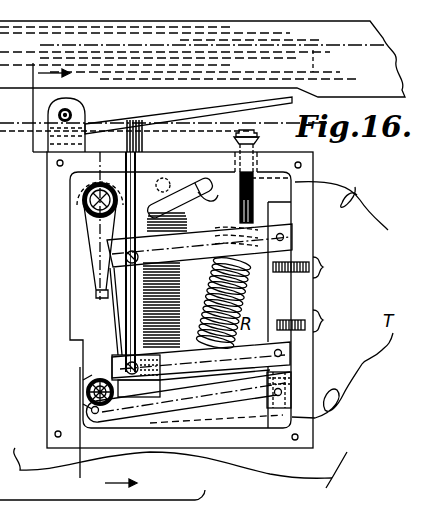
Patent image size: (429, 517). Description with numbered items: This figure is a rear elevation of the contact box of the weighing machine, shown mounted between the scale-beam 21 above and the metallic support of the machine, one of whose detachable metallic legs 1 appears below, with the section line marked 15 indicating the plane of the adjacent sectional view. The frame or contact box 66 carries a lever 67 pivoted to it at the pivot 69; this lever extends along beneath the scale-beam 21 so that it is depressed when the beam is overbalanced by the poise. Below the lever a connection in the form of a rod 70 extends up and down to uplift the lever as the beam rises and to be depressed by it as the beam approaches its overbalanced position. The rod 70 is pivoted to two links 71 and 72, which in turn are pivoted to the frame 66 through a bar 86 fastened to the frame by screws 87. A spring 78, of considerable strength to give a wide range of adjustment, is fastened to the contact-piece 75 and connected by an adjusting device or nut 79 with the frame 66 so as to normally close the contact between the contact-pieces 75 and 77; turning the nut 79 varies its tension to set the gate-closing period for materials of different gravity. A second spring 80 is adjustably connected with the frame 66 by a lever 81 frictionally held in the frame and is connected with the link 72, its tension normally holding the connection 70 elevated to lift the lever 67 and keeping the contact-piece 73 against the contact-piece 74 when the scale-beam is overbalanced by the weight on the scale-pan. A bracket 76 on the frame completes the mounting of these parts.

The detachable metallic leg 1 is at (333, 476).
The table 15 is at (166, 266).
The scale-beam 21 is at (202, 86).
The frame or contact box 66 is at (298, 363).
The lever 67 is at (185, 116).
The pivot 69 is at (70, 112).
The connection rod 70 is at (233, 143).
The link 71 is at (199, 245).
The link 72 is at (201, 361).
The contact-piece 73 is at (123, 274).
The contact-piece 74 is at (105, 289).
The contact-piece 75 is at (188, 397).
The bracket 76 is at (283, 391).
The contact-piece 77 is at (85, 395).
The spring 78 is at (212, 300).
The adjusting device or nut 79 is at (262, 165).
The spring 80 is at (177, 298).
The lever 81 is at (190, 205).
The bar 86 is at (291, 296).
The screws 87 is at (320, 262).